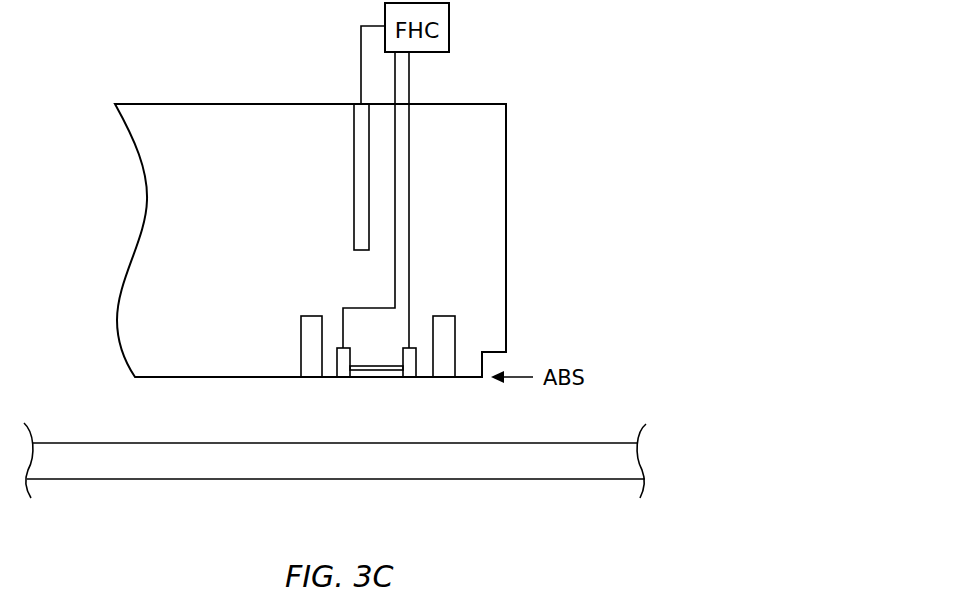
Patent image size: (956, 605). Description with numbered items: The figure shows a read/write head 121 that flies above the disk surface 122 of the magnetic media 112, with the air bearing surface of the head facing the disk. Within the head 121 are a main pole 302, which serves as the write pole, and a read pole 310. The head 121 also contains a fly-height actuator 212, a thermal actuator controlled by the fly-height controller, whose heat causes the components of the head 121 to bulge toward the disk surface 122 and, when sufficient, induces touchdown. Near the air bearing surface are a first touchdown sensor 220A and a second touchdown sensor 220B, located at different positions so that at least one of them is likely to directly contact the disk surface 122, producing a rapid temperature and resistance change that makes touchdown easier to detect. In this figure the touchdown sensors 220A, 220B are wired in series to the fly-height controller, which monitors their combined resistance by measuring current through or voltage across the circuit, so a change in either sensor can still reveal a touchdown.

The read/write head 121 is at (265, 221).
The fly-height actuator 212 is at (353, 126).
The read pole 310 is at (301, 337).
The second touchdown sensor 220B is at (344, 377).
The first touchdown sensor 220A is at (409, 377).
The main pole 302 is at (442, 377).
The disk surface 122 is at (115, 443).
The magnetic media 112 is at (115, 472).